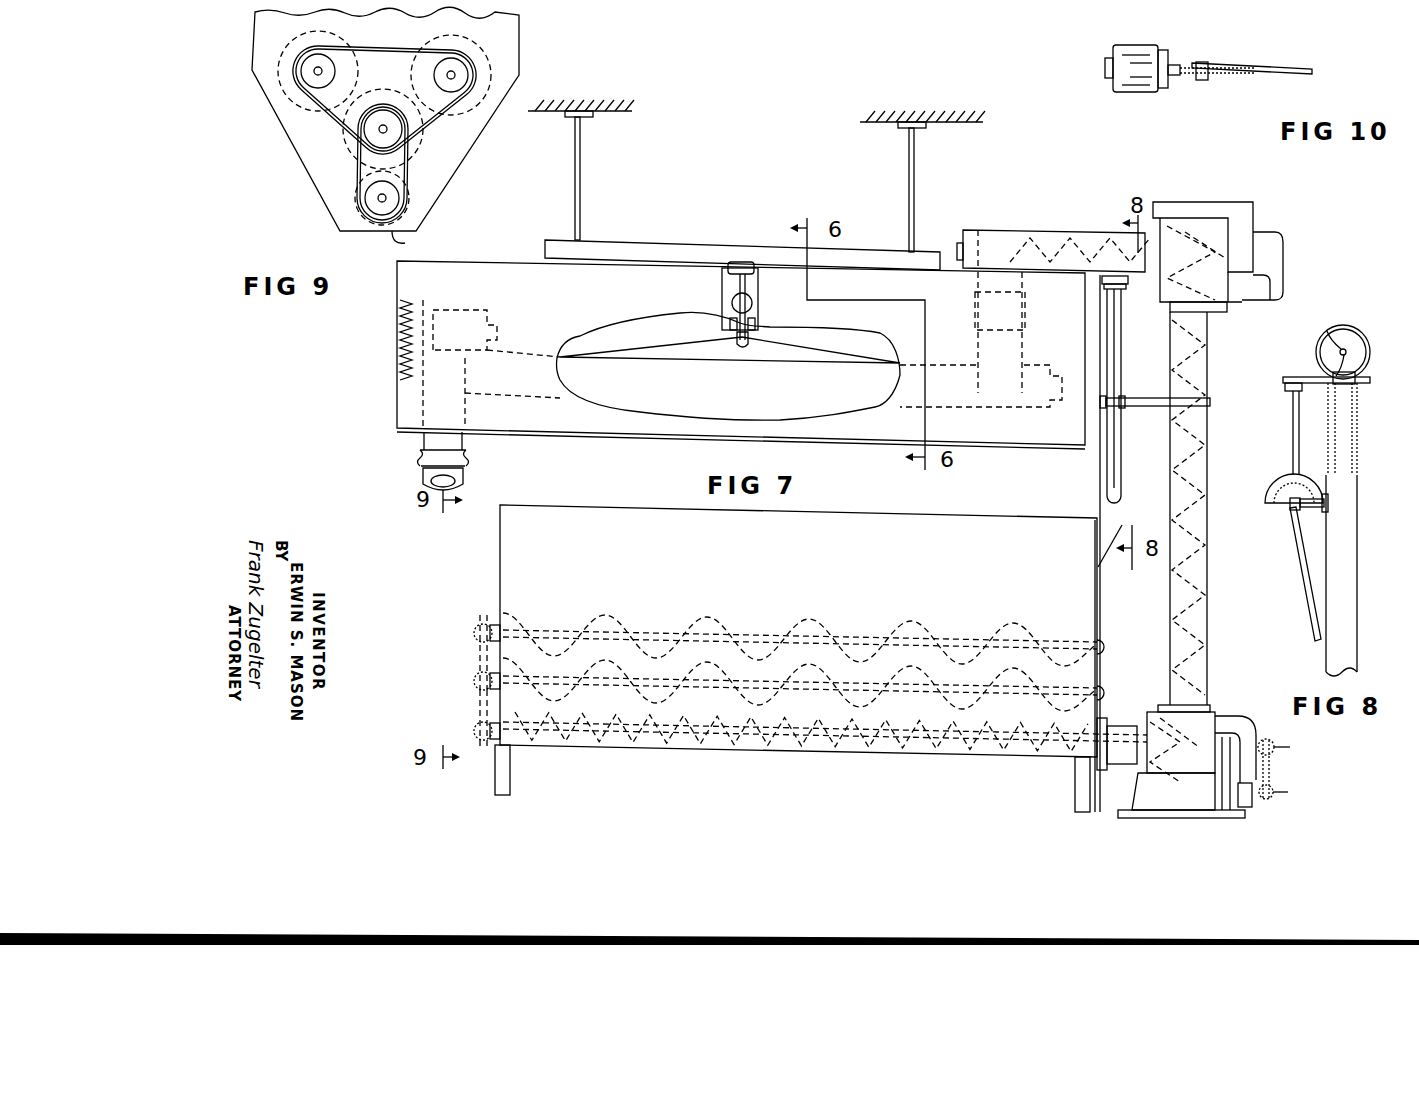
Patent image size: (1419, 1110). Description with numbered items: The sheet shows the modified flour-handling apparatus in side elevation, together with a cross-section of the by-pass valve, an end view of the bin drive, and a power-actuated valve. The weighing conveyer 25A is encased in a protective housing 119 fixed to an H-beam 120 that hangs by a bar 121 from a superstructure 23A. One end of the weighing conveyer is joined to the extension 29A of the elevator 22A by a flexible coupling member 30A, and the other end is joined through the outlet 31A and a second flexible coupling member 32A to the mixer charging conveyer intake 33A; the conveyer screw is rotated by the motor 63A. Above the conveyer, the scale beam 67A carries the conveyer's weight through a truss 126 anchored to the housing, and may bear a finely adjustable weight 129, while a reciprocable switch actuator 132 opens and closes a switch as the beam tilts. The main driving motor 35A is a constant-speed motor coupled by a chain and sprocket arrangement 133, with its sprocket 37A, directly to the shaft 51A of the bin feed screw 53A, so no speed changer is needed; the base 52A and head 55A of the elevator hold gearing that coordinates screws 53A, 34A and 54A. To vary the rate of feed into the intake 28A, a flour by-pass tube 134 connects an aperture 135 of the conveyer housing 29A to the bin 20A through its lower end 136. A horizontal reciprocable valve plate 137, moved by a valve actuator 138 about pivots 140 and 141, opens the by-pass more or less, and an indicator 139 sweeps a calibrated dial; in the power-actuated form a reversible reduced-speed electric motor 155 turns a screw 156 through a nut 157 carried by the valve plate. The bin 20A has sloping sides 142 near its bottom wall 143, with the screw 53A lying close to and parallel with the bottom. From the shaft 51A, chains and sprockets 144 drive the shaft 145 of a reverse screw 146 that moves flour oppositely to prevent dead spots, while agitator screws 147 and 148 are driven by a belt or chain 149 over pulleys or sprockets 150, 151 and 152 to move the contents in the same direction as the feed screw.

In FIG. 9, the flour bin 20A is at (516, 53).
In FIG. 7, the flour bin 20A is at (513, 569).
In FIG. 7, the elevator 22A is at (1209, 563).
In FIG. 7, the superstructure 23A is at (949, 124).
In FIG. 7, the weighing conveyer 25A is at (703, 394).
In FIG. 7, the intake of the weighing conveyer 28A is at (1028, 349).
In FIG. 8, the extension of elevator 29A is at (1366, 340).
In FIG. 7, the extension of elevator 29A is at (1005, 240).
In FIG. 7, the flexible coupling member 30A is at (1028, 304).
In FIG. 7, the outlet pipe 31A is at (422, 435).
In FIG. 7, the second flexible coupling member 32A is at (420, 458).
In FIG. 7, the mixer charging conveyer intake 33A is at (422, 480).
In FIG. 7, the elevator screw 34A is at (1206, 594).
In FIG. 7, the main driving motor 35A is at (1236, 804).
In FIG. 7, the sprocket 37A is at (1276, 792).
In FIG. 9, the shaft of the bin feed screw 51A is at (380, 202).
In FIG. 7, the shaft of the bin feed screw 51A is at (480, 728).
In FIG. 7, the base of the elevator 52A is at (1132, 797).
In FIG. 9, the bin feed screw 53A is at (360, 210).
In FIG. 7, the bin feed screw 53A is at (1028, 752).
In FIG. 8, the screw 54A is at (1340, 331).
In FIG. 7, the screw 54A is at (1068, 242).
In FIG. 7, the head of the elevator 55A is at (1228, 211).
In FIG. 7, the motor 63A is at (462, 310).
In FIG. 7, the beam 67A is at (759, 291).
In FIG. 7, the protective housing 119 is at (601, 431).
In FIG. 7, the H-beam 120 is at (655, 251).
In FIG. 7, the bar 121 is at (581, 181).
In FIG. 7, the truss 126 is at (801, 356).
In FIG. 7, the finely adjustable weight 129 is at (753, 304).
In FIG. 7, the reciprocable switch actuator 132 is at (727, 288).
In FIG. 7, the chain and sprocket arrangement 133 is at (1272, 771).
In FIG. 8, the flour by-pass tube 134 is at (1352, 500).
In FIG. 7, the flour by-pass tube 134 is at (1123, 358).
In FIG. 8, the aperture 135 is at (1358, 374).
In FIG. 7, the lower end of by-pass tube 136 is at (1100, 567).
In FIG. 10, the valve plate 137 is at (1273, 72).
In FIG. 8, the valve plate 137 is at (1360, 399).
In FIG. 7, the valve plate 137 is at (1126, 282).
In FIG. 8, the valve actuator 138 is at (1300, 563).
In FIG. 7, the valve actuator 138 is at (1116, 441).
In FIG. 8, the indicator 139 is at (1285, 480).
In FIG. 8, the pivot 140 is at (1292, 509).
In FIG. 7, the pivot 140 is at (1123, 401).
In FIG. 8, the pivot 141 is at (1288, 391).
In FIG. 7, the pivot 141 is at (1122, 289).
In FIG. 9, the sloping sides 142 is at (292, 150).
In FIG. 9, the bottom wall 143 is at (406, 243).
In FIG. 9, the chains and sprockets 144 is at (408, 172).
In FIG. 7, the chains and sprockets 144 is at (480, 699).
In FIG. 9, the shaft of reverse screw 145 is at (380, 133).
In FIG. 9, the reverse screw 146 is at (362, 161).
In FIG. 7, the reverse screw 146 is at (666, 690).
In FIG. 9, the agitator screw 147 is at (288, 99).
In FIG. 9, the agitator screw 148 is at (490, 86).
In FIG. 7, the agitator screw 148 is at (622, 612).
In FIG. 9, the belt or chain 149 is at (432, 116).
In FIG. 7, the belt or chain 149 is at (480, 651).
In FIG. 9, the pulley shaft 150 is at (462, 73).
In FIG. 7, the pulley shaft 150 is at (480, 629).
In FIG. 9, the pulley or sprocket 151 is at (330, 62).
In FIG. 9, the pulley or sprocket 152 is at (372, 127).
In FIG. 7, the pulley or sprocket 152 is at (480, 673).
In FIG. 10, the reversible reduced-speed electric motor 155 is at (1136, 86).
In FIG. 10, the screw 156 is at (1224, 80).
In FIG. 10, the nut 157 is at (1201, 81).